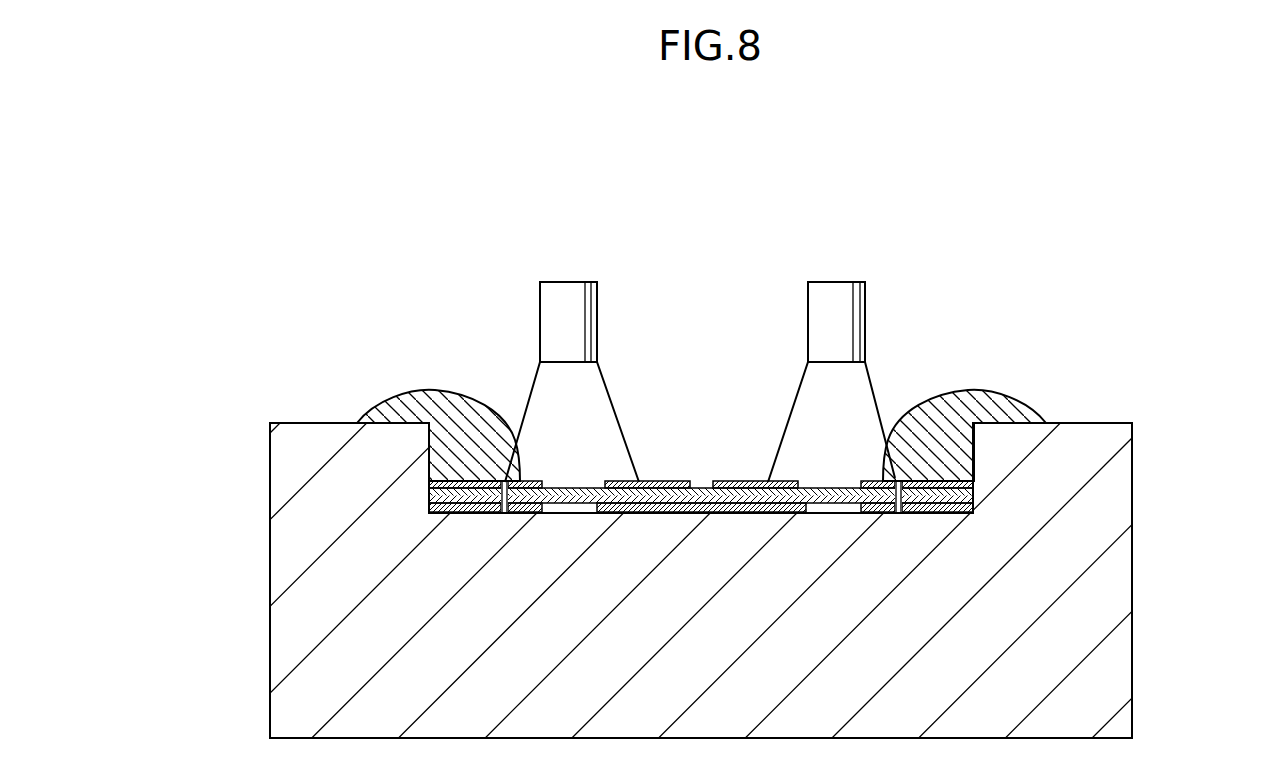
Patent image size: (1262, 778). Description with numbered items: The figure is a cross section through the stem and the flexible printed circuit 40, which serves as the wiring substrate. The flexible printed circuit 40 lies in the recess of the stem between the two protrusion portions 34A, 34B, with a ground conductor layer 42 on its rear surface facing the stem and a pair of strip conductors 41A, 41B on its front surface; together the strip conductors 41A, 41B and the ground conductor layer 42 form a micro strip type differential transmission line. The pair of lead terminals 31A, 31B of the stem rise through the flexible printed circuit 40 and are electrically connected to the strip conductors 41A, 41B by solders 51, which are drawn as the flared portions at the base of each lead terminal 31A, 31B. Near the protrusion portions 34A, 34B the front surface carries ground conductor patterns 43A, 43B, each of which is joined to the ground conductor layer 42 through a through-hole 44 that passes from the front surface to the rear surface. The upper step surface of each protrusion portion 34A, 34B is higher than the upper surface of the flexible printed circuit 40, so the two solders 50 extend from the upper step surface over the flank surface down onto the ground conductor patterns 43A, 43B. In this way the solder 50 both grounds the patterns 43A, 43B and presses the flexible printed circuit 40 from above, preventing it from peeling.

The lead terminal 31A is at (568, 297).
The lead terminal 31B is at (838, 292).
The protrusion portion 34A is at (261, 423).
The protrusion portion 34B is at (1143, 423).
The flexible printed circuit 40 is at (702, 488).
The strip conductor 41A is at (657, 480).
The strip conductor 41B is at (752, 480).
The ground conductor layer 42 is at (488, 508).
The ground conductor pattern 43A is at (480, 480).
The ground conductor pattern 43B is at (926, 480).
The through-hole 44 is at (505, 508).
The solder 50 is at (430, 403).
The solder 51 is at (543, 385).